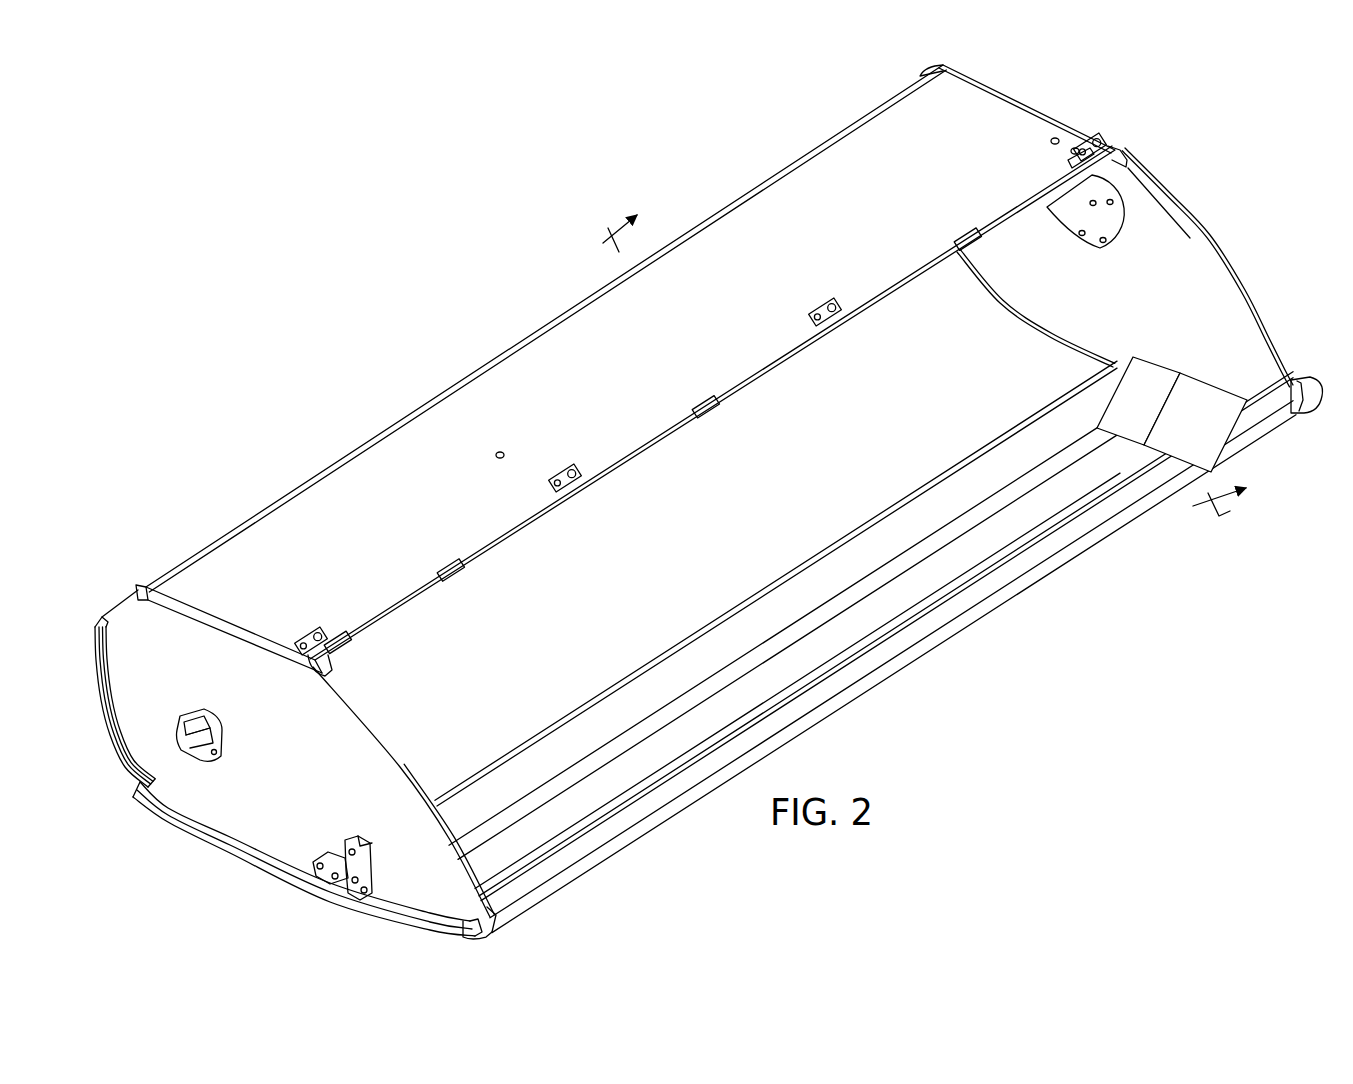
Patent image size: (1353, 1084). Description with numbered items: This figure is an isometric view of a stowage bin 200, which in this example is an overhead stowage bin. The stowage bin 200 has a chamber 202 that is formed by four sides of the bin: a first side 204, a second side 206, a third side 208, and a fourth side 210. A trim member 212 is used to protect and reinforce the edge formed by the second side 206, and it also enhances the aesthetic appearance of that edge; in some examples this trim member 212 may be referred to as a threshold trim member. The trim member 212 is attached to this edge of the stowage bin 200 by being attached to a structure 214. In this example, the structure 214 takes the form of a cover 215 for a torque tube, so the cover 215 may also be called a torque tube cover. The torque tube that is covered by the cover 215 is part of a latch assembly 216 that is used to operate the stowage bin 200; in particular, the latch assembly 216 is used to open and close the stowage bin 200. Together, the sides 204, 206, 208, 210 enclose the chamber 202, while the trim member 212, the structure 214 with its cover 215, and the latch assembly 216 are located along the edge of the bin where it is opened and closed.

The stowage bin 200 is at (244, 408).
The chamber 202 is at (741, 529).
The first side 204 is at (466, 406).
The second side 206 is at (218, 868).
The third side 208 is at (210, 803).
The fourth side 210 is at (1021, 296).
The trim member 212 is at (919, 660).
The structure 214 is at (1158, 370).
The cover 215 is at (1214, 402).
The latch assembly 216 is at (332, 838).